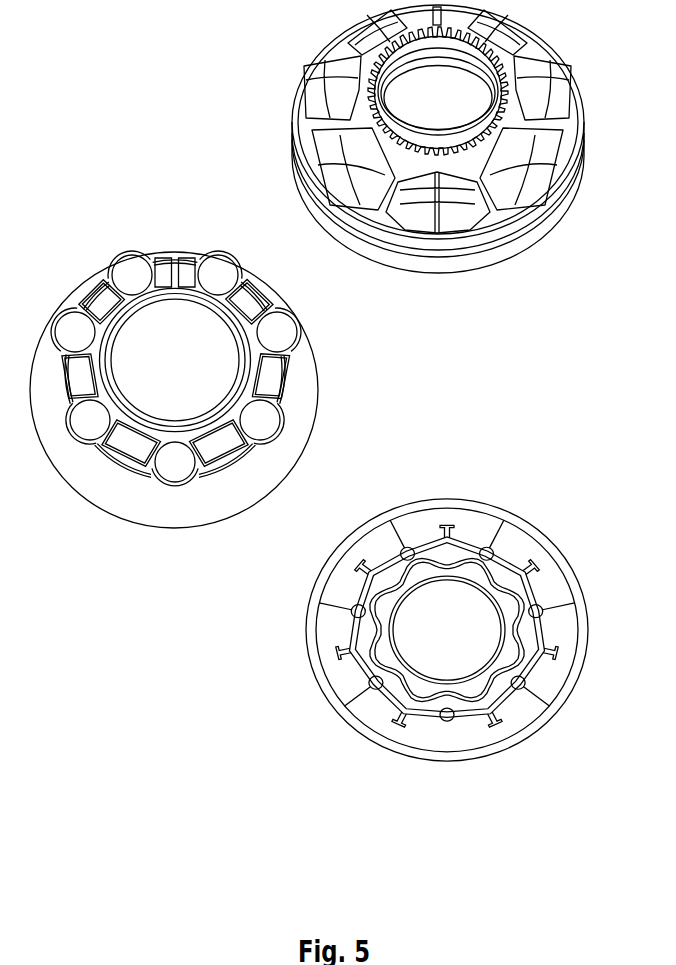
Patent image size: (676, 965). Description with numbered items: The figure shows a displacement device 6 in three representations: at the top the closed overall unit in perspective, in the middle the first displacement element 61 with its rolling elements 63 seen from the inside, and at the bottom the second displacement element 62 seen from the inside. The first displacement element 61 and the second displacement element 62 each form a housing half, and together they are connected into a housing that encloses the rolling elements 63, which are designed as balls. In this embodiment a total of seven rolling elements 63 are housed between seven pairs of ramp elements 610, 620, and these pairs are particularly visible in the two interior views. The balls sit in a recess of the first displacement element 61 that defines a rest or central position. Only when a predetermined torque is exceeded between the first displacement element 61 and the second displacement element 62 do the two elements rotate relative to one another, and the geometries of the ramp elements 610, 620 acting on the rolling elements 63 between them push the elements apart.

The displacement device 6 is at (284, 114).
The first displacement element 61 is at (176, 261).
The rolling elements 63 is at (80, 427).
The ramp elements 610 is at (208, 458).
The second displacement element 62 is at (399, 516).
The ramp elements 620 is at (470, 547).